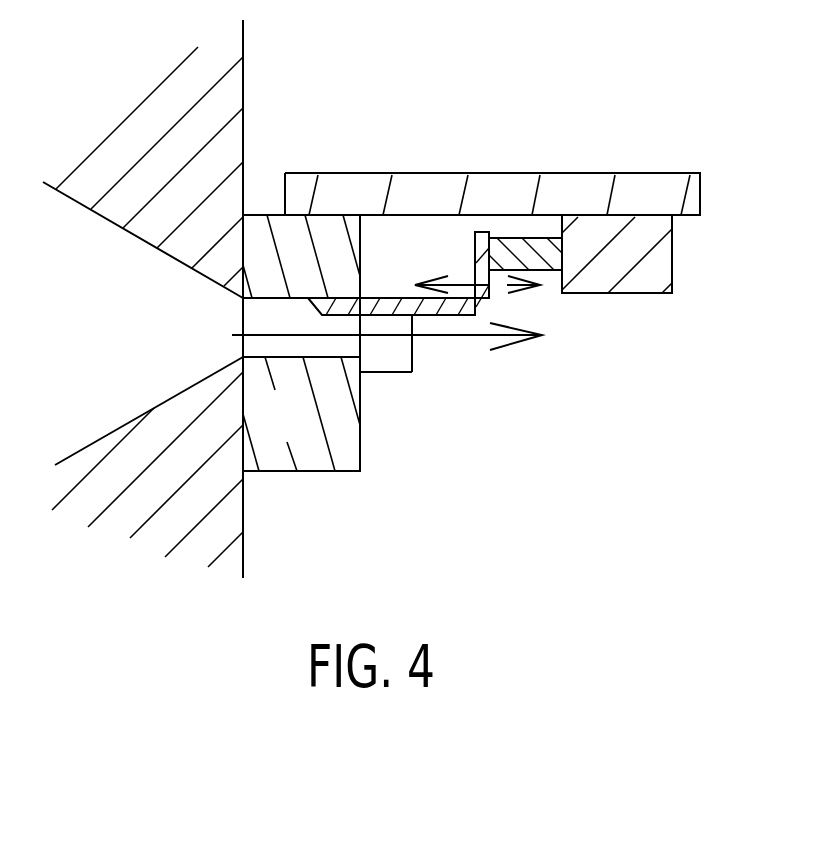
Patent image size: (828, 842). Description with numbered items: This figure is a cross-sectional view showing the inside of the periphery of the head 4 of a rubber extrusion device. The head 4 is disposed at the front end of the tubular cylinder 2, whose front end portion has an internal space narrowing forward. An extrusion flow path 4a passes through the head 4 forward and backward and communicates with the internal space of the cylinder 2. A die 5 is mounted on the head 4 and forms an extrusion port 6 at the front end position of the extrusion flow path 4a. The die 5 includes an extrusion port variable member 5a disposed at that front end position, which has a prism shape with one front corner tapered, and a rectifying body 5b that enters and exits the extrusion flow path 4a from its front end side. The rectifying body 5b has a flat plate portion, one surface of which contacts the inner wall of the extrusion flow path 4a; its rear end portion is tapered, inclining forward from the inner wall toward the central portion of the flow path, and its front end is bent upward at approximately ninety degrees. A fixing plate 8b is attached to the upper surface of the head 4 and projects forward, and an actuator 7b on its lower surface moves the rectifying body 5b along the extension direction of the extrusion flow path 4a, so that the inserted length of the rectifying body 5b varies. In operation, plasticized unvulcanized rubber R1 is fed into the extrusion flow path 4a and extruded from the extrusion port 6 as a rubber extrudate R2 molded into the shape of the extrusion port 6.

The cylinder 2 is at (230, 103).
The head 4 is at (301, 386).
The extrusion flow path 4a is at (288, 345).
The die 5 is at (409, 337).
The extrusion port variable member 5a is at (407, 348).
The rectifying body 5b is at (407, 298).
The extrusion port 6 is at (362, 340).
The actuator 7b is at (528, 237).
The fixing plate 8b is at (425, 183).
The unvulcanized rubber R1 is at (364, 336).
The rubber extrudate R2 is at (498, 315).